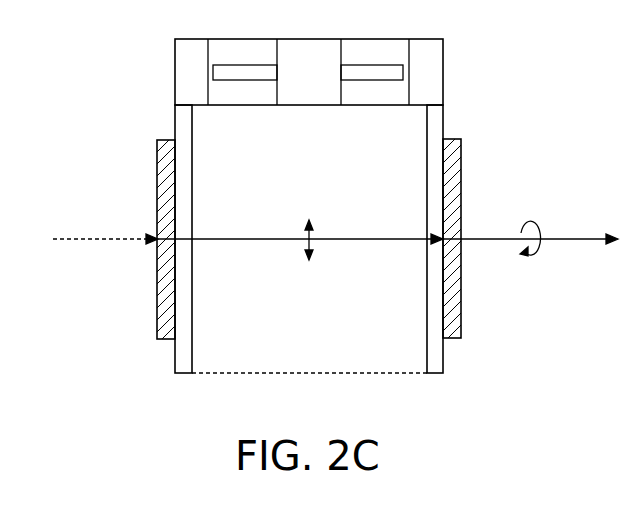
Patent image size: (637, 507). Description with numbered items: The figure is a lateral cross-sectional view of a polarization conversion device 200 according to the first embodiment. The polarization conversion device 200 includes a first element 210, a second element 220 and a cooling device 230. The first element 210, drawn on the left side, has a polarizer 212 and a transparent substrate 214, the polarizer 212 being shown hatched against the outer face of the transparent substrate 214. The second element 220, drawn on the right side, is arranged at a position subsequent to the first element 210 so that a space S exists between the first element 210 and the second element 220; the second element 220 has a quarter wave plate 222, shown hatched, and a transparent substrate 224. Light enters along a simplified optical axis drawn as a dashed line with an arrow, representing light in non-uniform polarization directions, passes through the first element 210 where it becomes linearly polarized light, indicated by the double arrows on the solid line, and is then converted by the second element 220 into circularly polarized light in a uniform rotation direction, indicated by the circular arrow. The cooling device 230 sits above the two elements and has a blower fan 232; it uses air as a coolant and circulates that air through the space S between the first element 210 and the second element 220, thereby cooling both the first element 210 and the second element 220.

The polarization conversion device 200 is at (523, 23).
The cooling device 230 is at (444, 73).
The blower fan 232 is at (376, 64).
The first element 210 is at (80, 125).
The transparent substrate 214 is at (175, 124).
The polarizer 212 is at (157, 153).
The second element 220 is at (538, 300).
The 1/4 wave plate 222 is at (461, 322).
The transparent substrate 224 is at (444, 348).
The space S is at (311, 376).